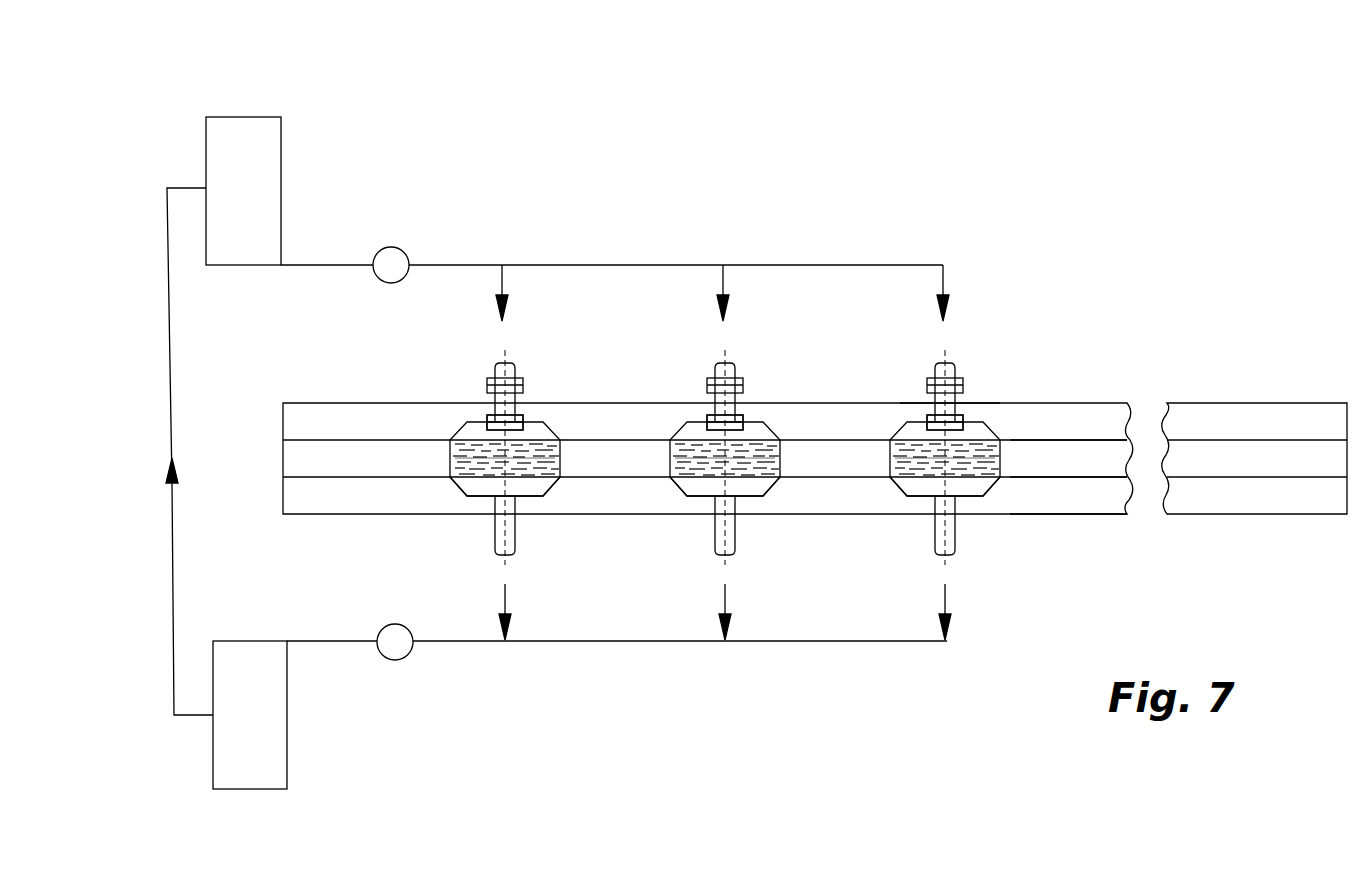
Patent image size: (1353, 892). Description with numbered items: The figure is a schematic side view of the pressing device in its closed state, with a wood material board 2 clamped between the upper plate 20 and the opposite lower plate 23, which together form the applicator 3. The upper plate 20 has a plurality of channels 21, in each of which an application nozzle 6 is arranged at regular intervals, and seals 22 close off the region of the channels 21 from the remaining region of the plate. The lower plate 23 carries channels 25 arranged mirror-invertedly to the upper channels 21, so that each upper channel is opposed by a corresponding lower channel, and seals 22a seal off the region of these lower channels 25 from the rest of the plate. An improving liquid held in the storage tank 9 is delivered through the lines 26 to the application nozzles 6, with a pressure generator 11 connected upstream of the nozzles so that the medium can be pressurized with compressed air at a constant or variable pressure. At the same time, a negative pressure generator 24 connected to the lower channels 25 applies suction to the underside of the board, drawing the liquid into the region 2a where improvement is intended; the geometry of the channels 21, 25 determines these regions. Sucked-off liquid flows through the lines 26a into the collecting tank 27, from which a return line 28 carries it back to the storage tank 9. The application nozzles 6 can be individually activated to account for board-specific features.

The wood material board 2 is at (357, 462).
The region of the wood material board 2a is at (478, 462).
The applicator 3 is at (1004, 324).
The application nozzle 6 is at (497, 403).
The storage tank 9 is at (240, 172).
The pressure generator 11 is at (392, 250).
The upper plate 20 is at (1025, 420).
The channel 21 is at (470, 430).
The seal 22 is at (1060, 440).
The seal 22a is at (1042, 477).
The lower plate 23 is at (1015, 492).
The negative pressure generator 24 is at (400, 655).
The channel 25 is at (525, 487).
The line 26 is at (621, 265).
The line 26a is at (600, 642).
The collecting tank 27 is at (258, 713).
The return line 28 is at (172, 573).